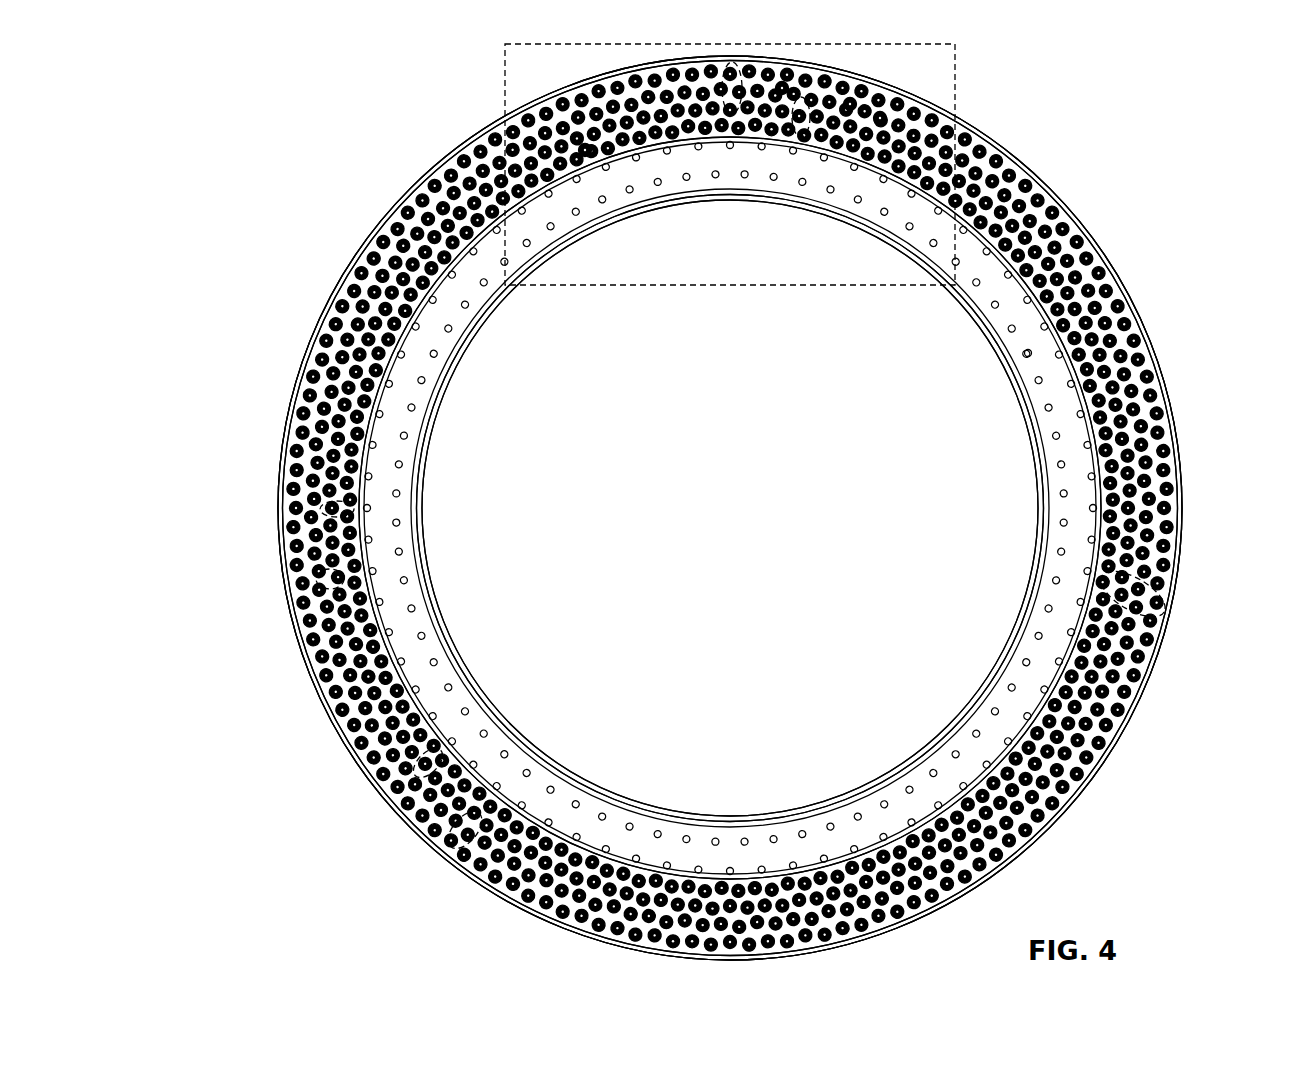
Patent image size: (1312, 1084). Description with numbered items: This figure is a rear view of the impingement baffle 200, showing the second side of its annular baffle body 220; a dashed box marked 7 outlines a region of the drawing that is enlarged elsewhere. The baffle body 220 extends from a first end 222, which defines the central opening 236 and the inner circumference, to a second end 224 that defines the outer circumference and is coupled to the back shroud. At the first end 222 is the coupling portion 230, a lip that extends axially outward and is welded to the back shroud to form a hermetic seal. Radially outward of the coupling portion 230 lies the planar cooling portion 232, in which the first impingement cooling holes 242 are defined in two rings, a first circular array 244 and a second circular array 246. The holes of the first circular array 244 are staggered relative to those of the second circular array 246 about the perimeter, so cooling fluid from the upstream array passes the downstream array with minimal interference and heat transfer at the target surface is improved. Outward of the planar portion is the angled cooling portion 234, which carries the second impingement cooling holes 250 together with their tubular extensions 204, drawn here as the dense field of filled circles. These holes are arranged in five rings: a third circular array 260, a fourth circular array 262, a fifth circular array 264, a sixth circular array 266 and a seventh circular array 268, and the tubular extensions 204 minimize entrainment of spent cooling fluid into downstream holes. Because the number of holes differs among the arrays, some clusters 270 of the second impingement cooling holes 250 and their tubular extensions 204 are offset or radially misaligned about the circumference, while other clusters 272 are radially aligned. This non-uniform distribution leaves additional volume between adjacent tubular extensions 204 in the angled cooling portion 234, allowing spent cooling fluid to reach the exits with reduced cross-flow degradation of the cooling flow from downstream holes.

The detail view region of FIG. 7 is at (505, 80).
The impingement baffle 200 is at (1200, 112).
The tubular extensions 204 is at (1185, 578).
The baffle body 220 is at (1183, 178).
The first end 222 is at (1011, 397).
The second end 224 is at (1178, 410).
The coupling portion 230 is at (985, 328).
The planar cooling portion 232 is at (1003, 258).
The angled cooling portion 234 is at (1088, 222).
The central opening 236 is at (730, 508).
The first impingement cooling holes 242 is at (1031, 298).
The first circular array 244 is at (1012, 354).
The second circular array 246 is at (1073, 330).
The second impingement cooling holes 250 is at (622, 80).
The third circular array 260 is at (577, 150).
The fourth circular array 262 is at (780, 64).
The fifth circular array 264 is at (775, 90).
The sixth circular array 266 is at (858, 106).
The seventh circular array 268 is at (884, 119).
The clusters 270 is at (745, 60).
The clusters 272 is at (808, 95).